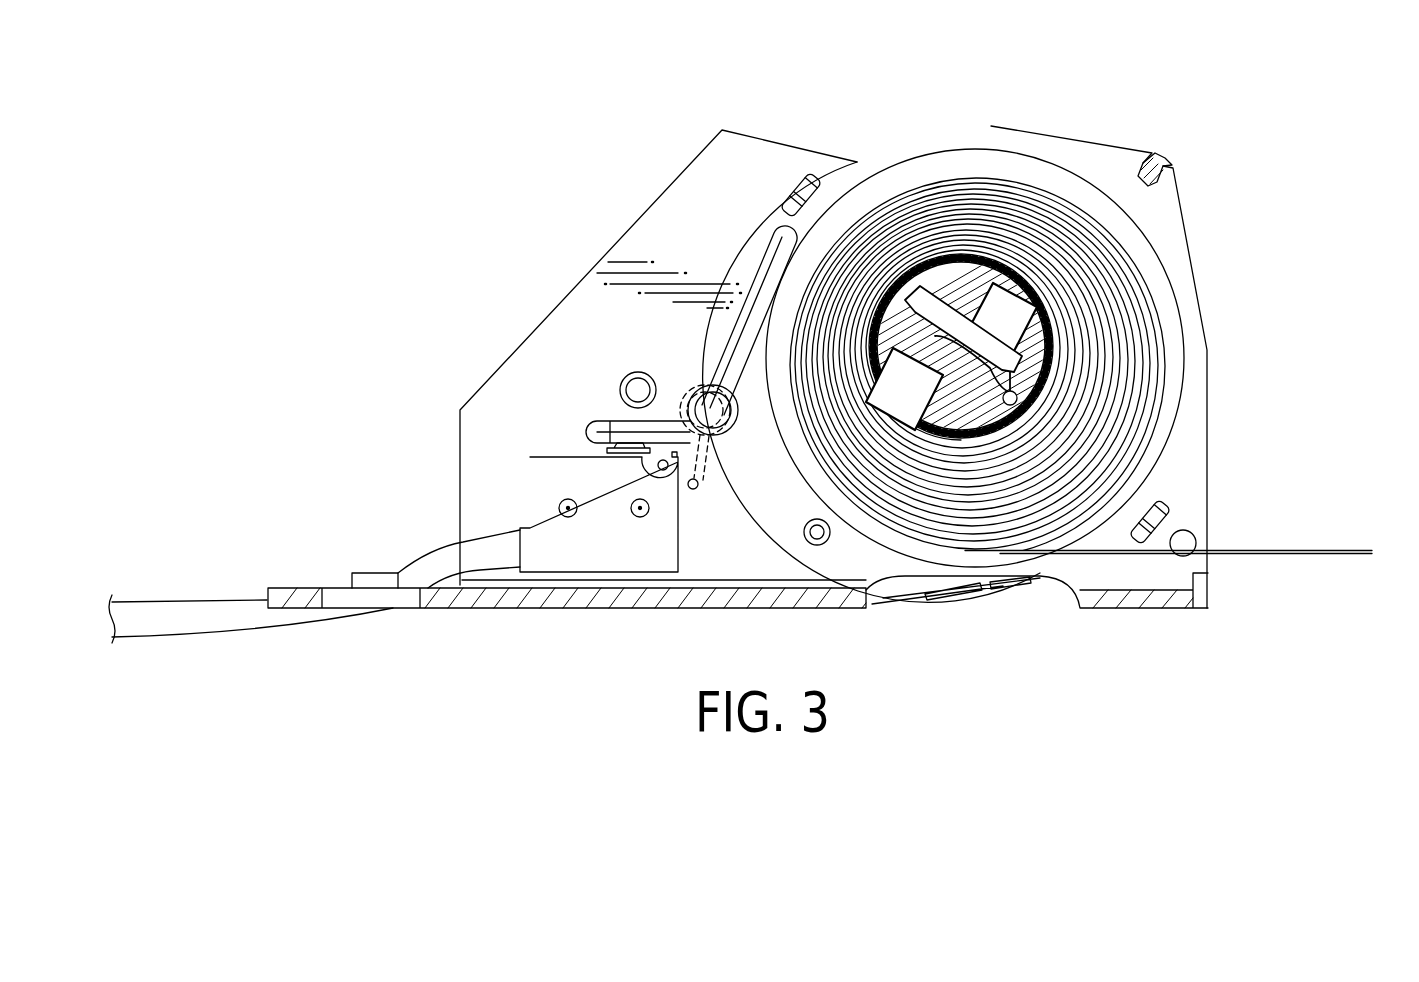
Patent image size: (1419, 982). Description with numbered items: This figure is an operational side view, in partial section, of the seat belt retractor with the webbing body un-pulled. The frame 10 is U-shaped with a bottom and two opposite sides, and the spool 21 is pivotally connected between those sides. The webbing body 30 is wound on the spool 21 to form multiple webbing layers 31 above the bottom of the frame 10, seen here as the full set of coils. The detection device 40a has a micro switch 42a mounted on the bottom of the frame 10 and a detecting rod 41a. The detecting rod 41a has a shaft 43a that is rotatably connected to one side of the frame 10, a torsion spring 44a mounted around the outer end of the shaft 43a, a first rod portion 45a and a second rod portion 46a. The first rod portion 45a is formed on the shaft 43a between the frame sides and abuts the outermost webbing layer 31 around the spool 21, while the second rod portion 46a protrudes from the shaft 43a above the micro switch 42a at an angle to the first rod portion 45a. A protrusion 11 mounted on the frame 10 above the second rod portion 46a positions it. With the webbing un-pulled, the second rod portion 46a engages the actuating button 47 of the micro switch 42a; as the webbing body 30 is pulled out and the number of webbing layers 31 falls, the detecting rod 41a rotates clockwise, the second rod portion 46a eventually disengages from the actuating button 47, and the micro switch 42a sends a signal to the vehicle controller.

The frame 10 is at (700, 187).
The protrusion 11 is at (635, 387).
The spool 21 is at (1068, 344).
The webbing body 30 is at (1072, 186).
The webbing layers 31 is at (1122, 252).
The detection device 40a is at (522, 436).
The detecting rod 41a is at (736, 456).
The micro switch 42a is at (595, 547).
The shaft 43a is at (790, 534).
The torsion spring 44a is at (693, 393).
The first rod portion 45a is at (762, 267).
The second rod portion 46a is at (597, 432).
The actuating button 47 is at (627, 450).